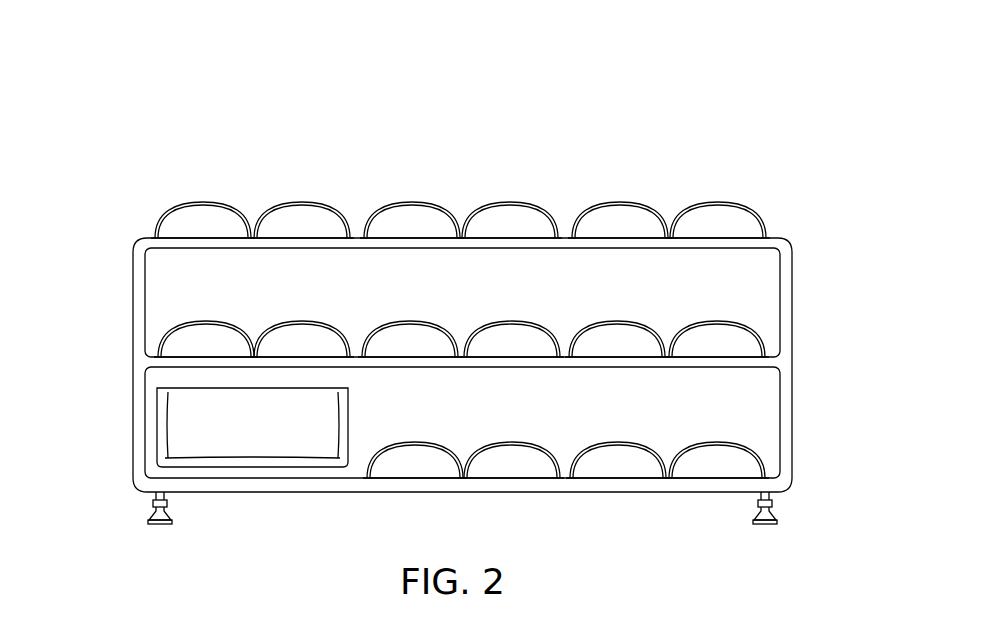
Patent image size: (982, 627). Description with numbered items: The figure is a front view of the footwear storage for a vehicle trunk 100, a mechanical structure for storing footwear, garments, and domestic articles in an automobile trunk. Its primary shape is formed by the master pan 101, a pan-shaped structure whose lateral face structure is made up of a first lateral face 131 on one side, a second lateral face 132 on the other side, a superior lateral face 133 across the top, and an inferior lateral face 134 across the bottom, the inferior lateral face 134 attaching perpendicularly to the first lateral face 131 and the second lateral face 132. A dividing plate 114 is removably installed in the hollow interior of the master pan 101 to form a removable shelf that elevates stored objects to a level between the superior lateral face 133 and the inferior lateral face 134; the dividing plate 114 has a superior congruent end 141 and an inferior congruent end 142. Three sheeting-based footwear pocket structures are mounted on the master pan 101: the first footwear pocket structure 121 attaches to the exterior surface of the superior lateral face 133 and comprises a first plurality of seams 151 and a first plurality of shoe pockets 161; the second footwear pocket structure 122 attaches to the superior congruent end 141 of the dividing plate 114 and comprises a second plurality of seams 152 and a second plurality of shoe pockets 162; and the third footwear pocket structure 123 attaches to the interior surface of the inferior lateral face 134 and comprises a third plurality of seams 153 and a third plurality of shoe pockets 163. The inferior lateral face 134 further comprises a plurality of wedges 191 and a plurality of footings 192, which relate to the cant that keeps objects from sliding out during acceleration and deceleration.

The footwear storage for a vehicle trunk 100 is at (121, 123).
The master pan 101 is at (792, 327).
The dividing plate 114 is at (170, 366).
The first footwear pocket structure 121 is at (505, 200).
The second footwear pocket structure 122 is at (467, 318).
The third footwear pocket structure 123 is at (520, 443).
The first lateral face 131 is at (145, 302).
The second lateral face 132 is at (795, 373).
The superior lateral face 133 is at (757, 248).
The inferior lateral face 134 is at (608, 494).
The superior congruent end 141 is at (390, 355).
The inferior congruent end 142 is at (388, 367).
The first plurality of seams 151 is at (350, 237).
The second plurality of seams 152 is at (345, 320).
The third plurality of seams 153 is at (668, 445).
The first plurality of shoe pockets 161 is at (717, 202).
The second plurality of shoe pockets 162 is at (600, 328).
The third plurality of shoe pockets 163 is at (490, 448).
The plurality of wedges 191 is at (160, 525).
The plurality of footings 192 is at (168, 503).